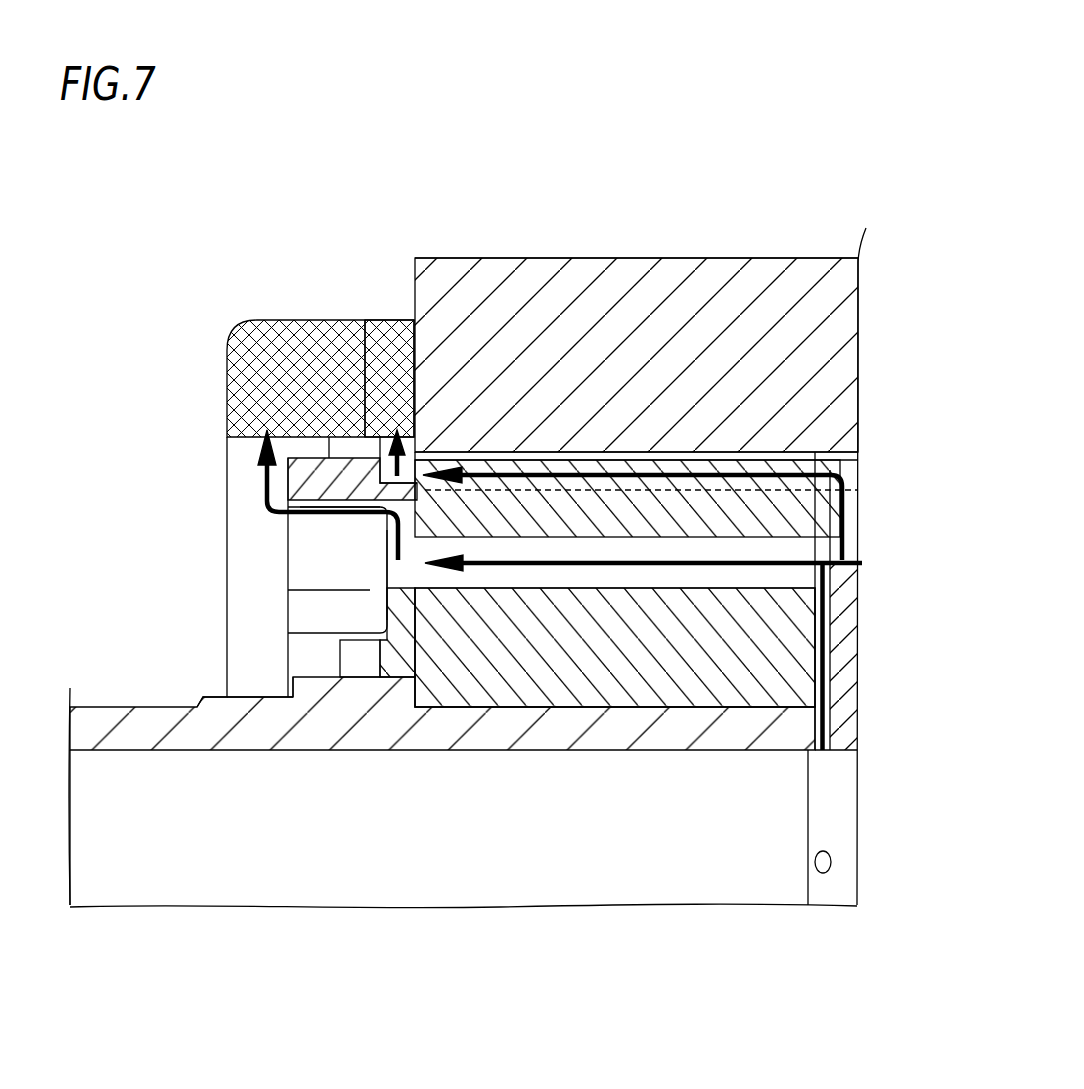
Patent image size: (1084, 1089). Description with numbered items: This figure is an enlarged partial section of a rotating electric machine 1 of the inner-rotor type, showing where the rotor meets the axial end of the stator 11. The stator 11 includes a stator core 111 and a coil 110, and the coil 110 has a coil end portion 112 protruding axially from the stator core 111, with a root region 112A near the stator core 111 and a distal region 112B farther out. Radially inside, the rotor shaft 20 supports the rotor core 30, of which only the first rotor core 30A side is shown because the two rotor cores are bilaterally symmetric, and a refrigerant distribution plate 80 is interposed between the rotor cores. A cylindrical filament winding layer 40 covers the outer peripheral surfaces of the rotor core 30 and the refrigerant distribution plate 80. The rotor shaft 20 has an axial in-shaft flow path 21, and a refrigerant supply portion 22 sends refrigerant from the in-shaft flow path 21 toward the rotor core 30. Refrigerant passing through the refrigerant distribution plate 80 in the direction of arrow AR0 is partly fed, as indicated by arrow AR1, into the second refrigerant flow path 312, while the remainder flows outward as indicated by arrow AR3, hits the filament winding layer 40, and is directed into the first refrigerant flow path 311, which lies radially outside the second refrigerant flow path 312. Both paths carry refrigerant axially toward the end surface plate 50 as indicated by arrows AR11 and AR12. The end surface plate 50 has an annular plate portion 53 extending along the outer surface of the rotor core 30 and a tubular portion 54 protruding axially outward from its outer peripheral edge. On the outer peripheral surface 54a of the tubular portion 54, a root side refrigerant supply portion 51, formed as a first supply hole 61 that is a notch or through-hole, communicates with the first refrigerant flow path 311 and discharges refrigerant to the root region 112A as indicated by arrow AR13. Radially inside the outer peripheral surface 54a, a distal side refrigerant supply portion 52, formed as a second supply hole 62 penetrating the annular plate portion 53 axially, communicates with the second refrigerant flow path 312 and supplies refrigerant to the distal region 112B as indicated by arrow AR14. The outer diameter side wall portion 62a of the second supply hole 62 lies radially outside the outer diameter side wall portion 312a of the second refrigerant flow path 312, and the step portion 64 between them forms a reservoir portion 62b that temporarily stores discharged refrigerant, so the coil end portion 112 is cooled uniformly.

The rotating electric machine 1 is at (233, 200).
The stator 11 is at (470, 255).
The stator core 111 is at (772, 258).
The coil end portion 112 is at (238, 325).
The coil 110 is at (315, 302).
The root region 112A is at (395, 312).
The distal region 112B is at (217, 435).
The arrow AR13 is at (366, 437).
The outer peripheral surface 54a is at (283, 398).
The tubular portion 54 is at (300, 502).
The first supply hole 61 is at (425, 475).
The arrow AR14 is at (263, 483).
The root side refrigerant supply portion 51 is at (417, 452).
The distal side refrigerant supply portion 52 is at (300, 558).
The second supply hole 62 is at (360, 633).
The outer diameter side wall portion 62a is at (372, 521).
The reservoir portion 62b is at (385, 523).
The step portion 64 is at (370, 590).
The rotor shaft 20 is at (115, 707).
The in-shaft flow path 21 is at (523, 863).
The refrigerant supply portion 22 is at (836, 862).
The end surface plate 50 is at (283, 667).
The annular plate portion 53 is at (455, 452).
The outer diameter side wall portion 312a is at (490, 490).
The arrow AR12 is at (593, 567).
The filament winding layer 40 is at (855, 448).
The first refrigerant flow path 311 is at (860, 472).
The second refrigerant flow path 312 is at (853, 596).
The first rotor core 30A is at (685, 795).
The rotor core 30 is at (672, 650).
The arrow AR11 is at (723, 470).
The arrow AR3 is at (850, 500).
The arrow AR1 is at (845, 555).
The arrow AR0 is at (848, 648).
The refrigerant distribution plate 80 is at (865, 683).